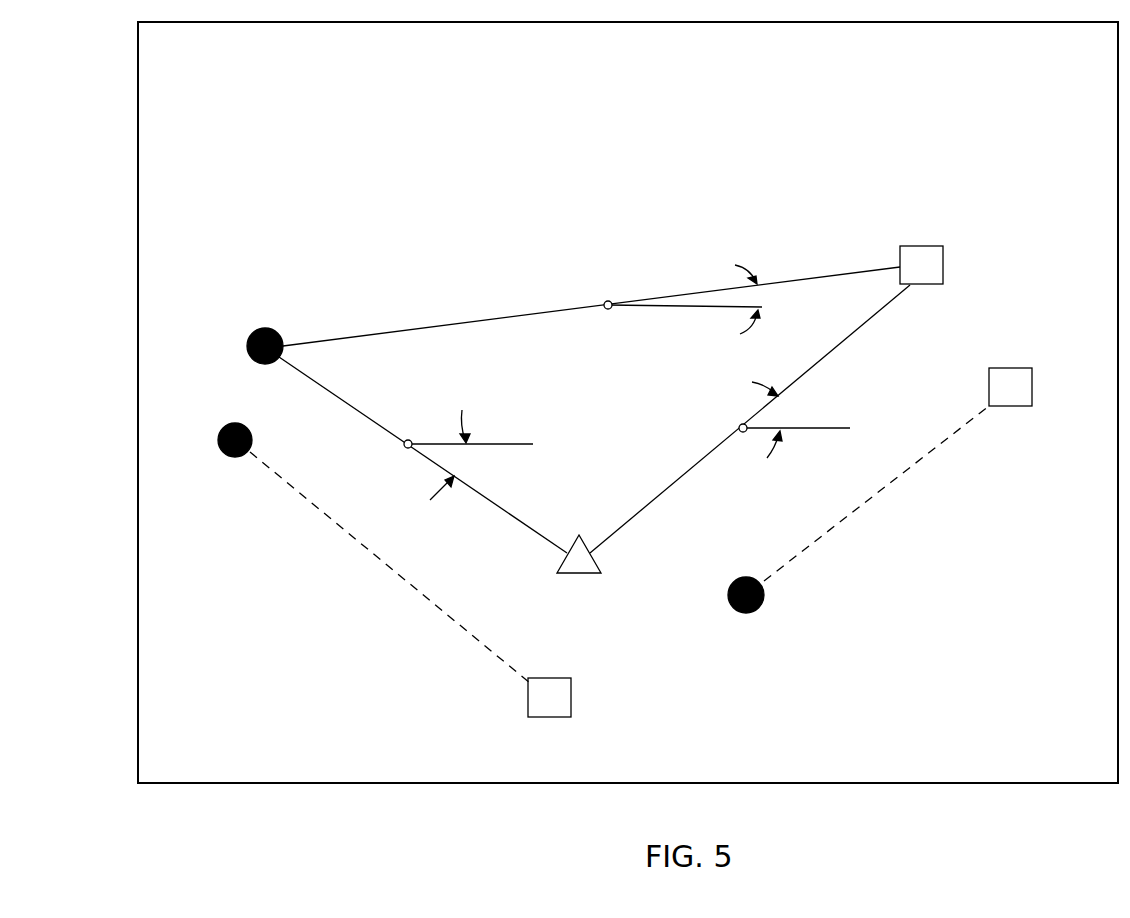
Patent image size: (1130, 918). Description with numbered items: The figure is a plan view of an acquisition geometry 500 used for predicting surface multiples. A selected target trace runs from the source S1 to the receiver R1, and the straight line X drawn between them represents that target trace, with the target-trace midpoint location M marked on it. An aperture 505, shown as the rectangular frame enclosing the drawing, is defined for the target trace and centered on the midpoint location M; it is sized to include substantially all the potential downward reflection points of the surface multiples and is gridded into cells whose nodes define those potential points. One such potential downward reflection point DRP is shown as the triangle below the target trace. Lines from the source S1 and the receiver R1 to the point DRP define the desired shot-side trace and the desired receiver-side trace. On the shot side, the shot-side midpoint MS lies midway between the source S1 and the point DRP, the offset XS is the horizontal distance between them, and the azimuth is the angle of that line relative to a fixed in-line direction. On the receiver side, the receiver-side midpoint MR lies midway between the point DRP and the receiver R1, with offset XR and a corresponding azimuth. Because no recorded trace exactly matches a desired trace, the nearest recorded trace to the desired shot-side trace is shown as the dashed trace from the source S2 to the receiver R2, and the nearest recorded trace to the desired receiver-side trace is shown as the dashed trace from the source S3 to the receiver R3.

The positioning diagram 500 is at (678, 18).
The aperture 505 is at (138, 61).
The source S1 is at (272, 328).
The source of nearest recorded trace S2 is at (235, 423).
The source of nearest recorded trace S3 is at (746, 577).
The receiver R1 is at (924, 246).
The receiver of nearest recorded trace R2 is at (548, 678).
The receiver of nearest recorded trace R3 is at (1010, 368).
The potential downward reflection point DRP is at (579, 535).
The displacement between S1 and R1 X is at (438, 325).
The shot-side offset XS is at (348, 402).
The receiver-side offset XR is at (703, 462).
The midpoint location of the target trace M is at (608, 310).
The shot-side midpoint MS is at (405, 447).
The receiver-side midpoint MR is at (740, 424).